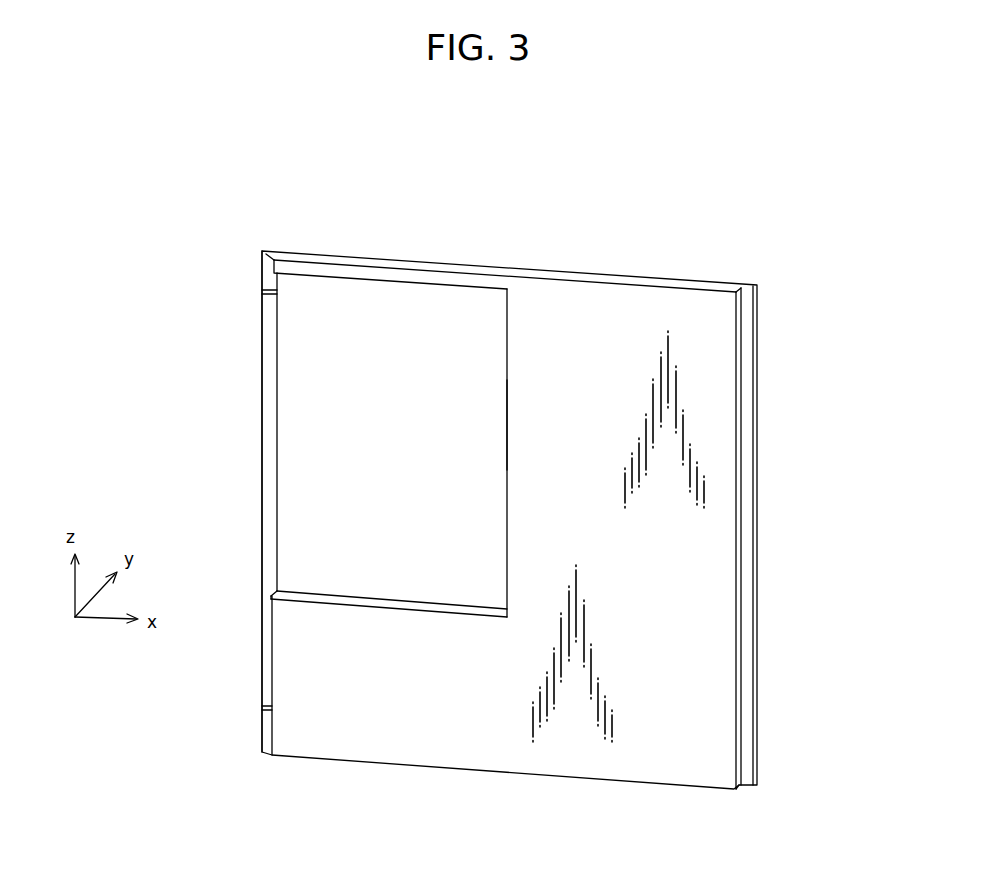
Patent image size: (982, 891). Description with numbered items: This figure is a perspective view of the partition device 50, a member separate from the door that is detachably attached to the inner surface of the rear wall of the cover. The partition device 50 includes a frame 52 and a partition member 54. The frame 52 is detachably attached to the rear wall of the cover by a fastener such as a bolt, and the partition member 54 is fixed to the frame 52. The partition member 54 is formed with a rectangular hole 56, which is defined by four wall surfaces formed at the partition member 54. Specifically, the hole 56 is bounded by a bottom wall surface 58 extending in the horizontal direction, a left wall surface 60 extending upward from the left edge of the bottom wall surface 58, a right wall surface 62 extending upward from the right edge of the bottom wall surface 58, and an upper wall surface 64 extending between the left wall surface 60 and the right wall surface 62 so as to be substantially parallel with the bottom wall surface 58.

The partition device 50 is at (772, 197).
The frame 52 is at (748, 493).
The partition member 54 is at (590, 760).
The hole 56 is at (505, 363).
The bottom wall surface 58 is at (423, 603).
The left wall surface 60 is at (288, 500).
The right wall surface 62 is at (507, 416).
The upper wall surface 64 is at (430, 272).